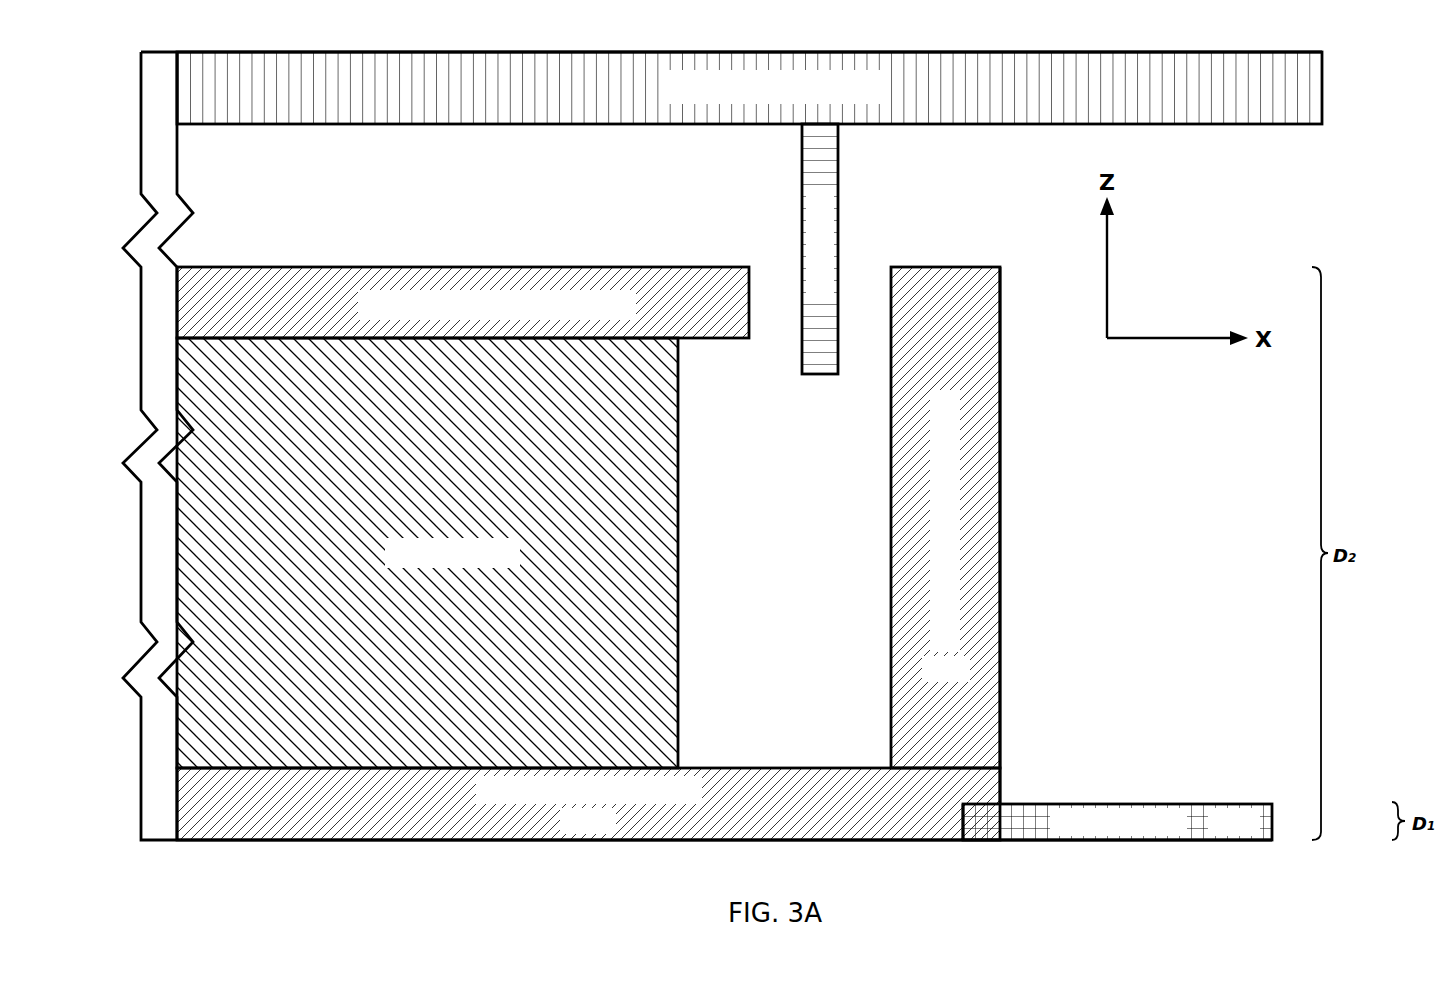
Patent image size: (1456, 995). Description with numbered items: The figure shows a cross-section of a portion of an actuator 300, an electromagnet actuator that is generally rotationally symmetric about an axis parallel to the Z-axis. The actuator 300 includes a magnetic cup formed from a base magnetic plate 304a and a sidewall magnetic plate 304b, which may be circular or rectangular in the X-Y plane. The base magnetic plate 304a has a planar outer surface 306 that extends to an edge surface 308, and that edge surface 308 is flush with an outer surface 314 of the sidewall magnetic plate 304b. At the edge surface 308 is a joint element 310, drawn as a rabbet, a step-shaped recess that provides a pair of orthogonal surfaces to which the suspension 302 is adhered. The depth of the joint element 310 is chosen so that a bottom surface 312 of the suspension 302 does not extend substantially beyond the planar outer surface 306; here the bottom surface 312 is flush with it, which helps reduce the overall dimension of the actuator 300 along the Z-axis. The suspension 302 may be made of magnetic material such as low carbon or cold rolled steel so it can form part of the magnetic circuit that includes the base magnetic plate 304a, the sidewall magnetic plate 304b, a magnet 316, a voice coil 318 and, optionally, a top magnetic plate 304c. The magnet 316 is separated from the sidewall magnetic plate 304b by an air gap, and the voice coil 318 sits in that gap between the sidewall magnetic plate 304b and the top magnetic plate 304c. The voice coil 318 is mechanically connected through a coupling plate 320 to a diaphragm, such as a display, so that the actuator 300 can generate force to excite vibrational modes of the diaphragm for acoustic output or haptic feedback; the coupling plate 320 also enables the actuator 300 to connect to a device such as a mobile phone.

The actuator 300 is at (1389, 54).
The suspension 302 is at (1117, 822).
The base magnetic plate 304a is at (588, 804).
The sidewall magnetic plate 304b is at (945, 517).
The top magnetic plate 304c is at (463, 302).
The planar outer surface 306 is at (457, 840).
The edge surface 308 is at (1000, 777).
The joint element 310 is at (975, 818).
The bottom surface 312 is at (1118, 840).
The outer surface 314 is at (1000, 483).
The magnet 316 is at (840, 403).
The voice coil 318 is at (838, 195).
The coupling plate 320 is at (749, 88).